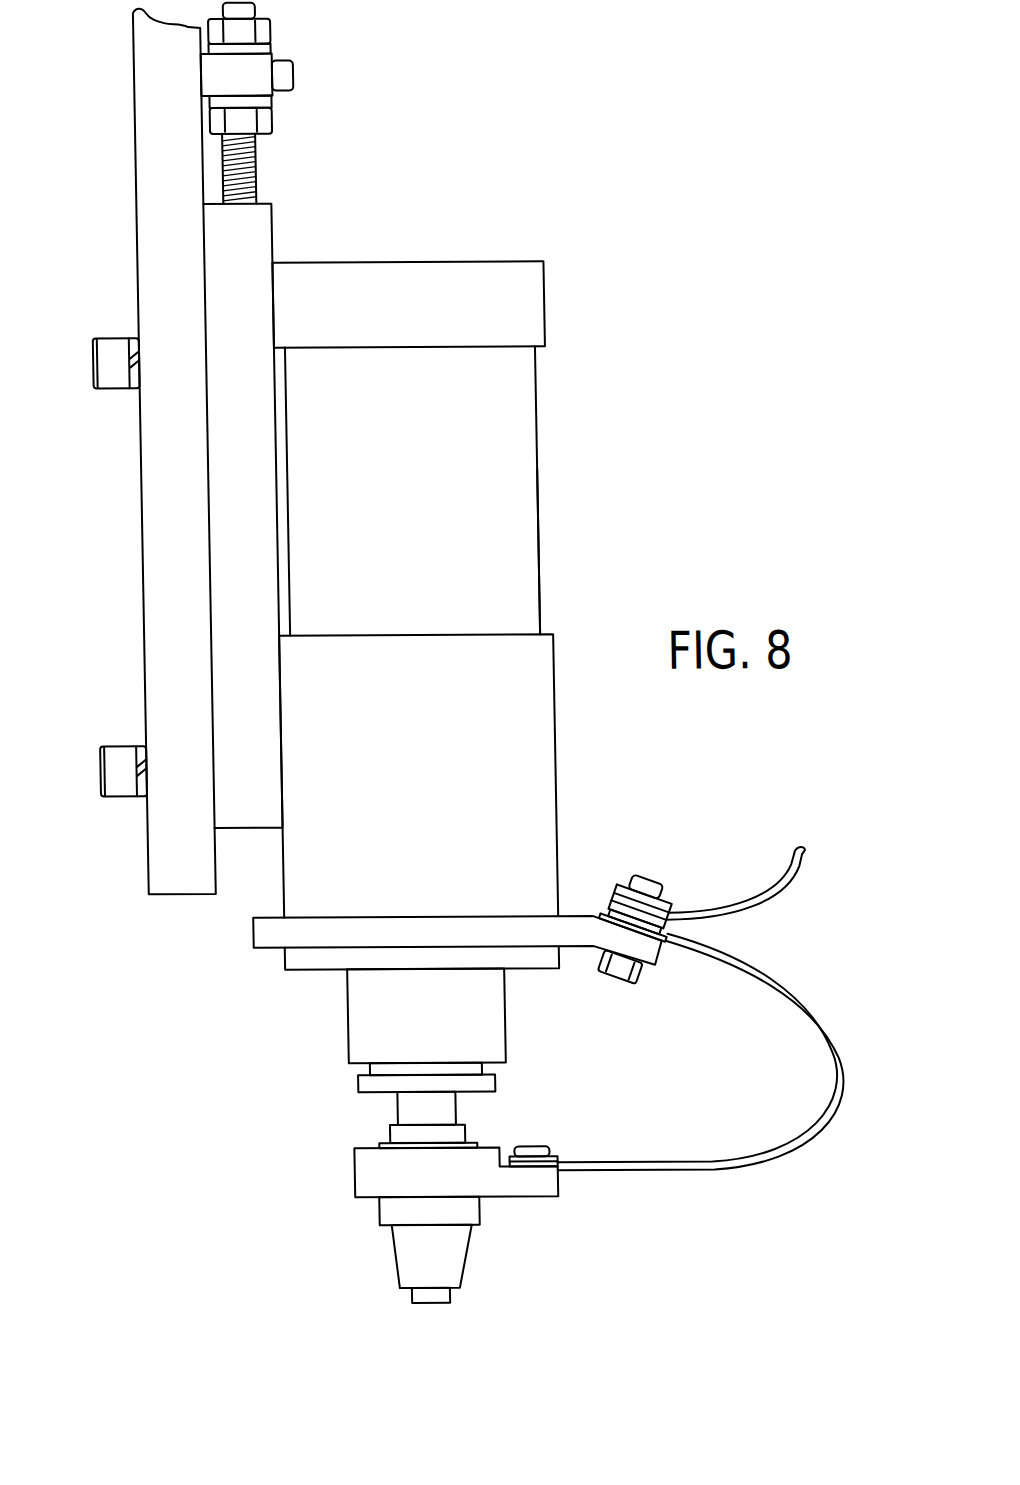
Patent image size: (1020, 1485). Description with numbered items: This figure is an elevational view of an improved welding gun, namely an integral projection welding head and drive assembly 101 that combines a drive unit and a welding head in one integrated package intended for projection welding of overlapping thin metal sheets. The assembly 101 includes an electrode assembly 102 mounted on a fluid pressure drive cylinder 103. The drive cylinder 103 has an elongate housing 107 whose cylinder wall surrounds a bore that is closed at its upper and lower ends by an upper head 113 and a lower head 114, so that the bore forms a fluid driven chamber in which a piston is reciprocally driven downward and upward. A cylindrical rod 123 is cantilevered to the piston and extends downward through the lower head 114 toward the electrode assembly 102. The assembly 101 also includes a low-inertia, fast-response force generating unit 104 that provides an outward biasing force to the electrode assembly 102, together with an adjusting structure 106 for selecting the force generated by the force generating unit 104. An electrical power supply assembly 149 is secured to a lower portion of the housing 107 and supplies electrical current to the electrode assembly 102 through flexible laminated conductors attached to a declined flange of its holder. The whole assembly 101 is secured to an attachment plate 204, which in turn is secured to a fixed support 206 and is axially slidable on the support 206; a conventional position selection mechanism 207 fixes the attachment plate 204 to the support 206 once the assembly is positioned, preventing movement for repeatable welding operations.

The integral projection welding head and drive assembly 101 is at (484, 585).
The electrode assembly 102 is at (343, 1265).
The fluid pressure drive cylinder 103 is at (574, 566).
The force generating unit 104 is at (308, 1000).
The adjusting structure 106 is at (331, 1086).
The elongate housing 107 is at (533, 468).
The upper head 113 is at (545, 326).
The lower head 114 is at (542, 633).
The cylindrical rod 123 is at (336, 1015).
The electrical power supply assembly 149 is at (638, 852).
The attachment plate 204 is at (275, 232).
The fixed support 206 is at (140, 627).
The position selection mechanism 207 is at (310, 59).